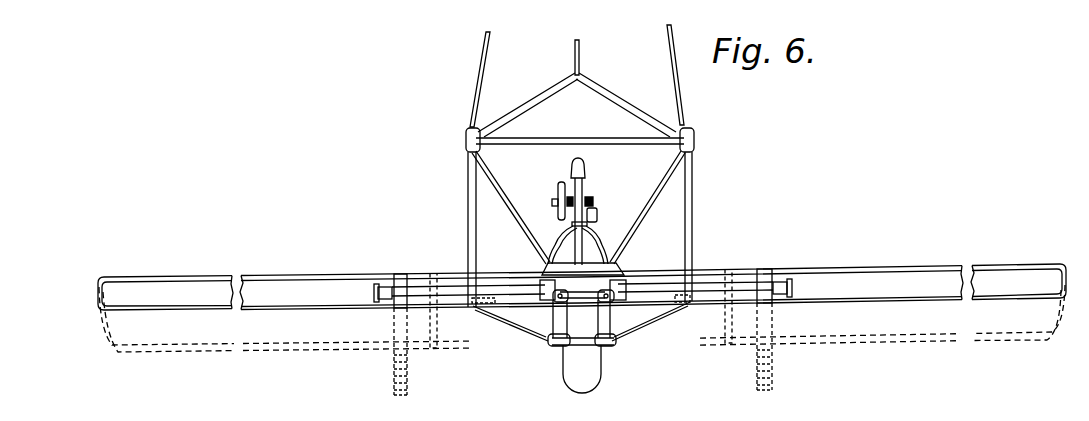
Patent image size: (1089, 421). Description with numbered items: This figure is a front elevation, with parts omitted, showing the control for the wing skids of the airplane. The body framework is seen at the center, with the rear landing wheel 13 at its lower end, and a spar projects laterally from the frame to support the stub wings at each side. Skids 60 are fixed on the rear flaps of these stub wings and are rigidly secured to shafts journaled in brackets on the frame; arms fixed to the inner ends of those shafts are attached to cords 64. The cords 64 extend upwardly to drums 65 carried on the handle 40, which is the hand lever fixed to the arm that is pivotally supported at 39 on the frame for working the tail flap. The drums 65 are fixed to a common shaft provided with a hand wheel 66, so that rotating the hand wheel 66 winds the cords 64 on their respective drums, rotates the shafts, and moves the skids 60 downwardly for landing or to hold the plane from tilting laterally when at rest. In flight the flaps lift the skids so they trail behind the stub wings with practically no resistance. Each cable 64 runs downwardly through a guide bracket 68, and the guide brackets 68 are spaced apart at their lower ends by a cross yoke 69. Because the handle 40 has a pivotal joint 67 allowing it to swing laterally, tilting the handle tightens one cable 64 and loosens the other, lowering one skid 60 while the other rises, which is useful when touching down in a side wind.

The landing wheel 13 is at (591, 381).
The pivotal support of arm 39 is at (531, 270).
The handle 40 is at (585, 168).
The skid 60 is at (393, 376).
The cord 64 is at (598, 214).
The drum 65 is at (591, 197).
The hand wheel 66 is at (557, 192).
The pivotal joint 67 is at (560, 343).
The guide bracket 68 is at (556, 245).
The cross yoke 69 is at (614, 257).